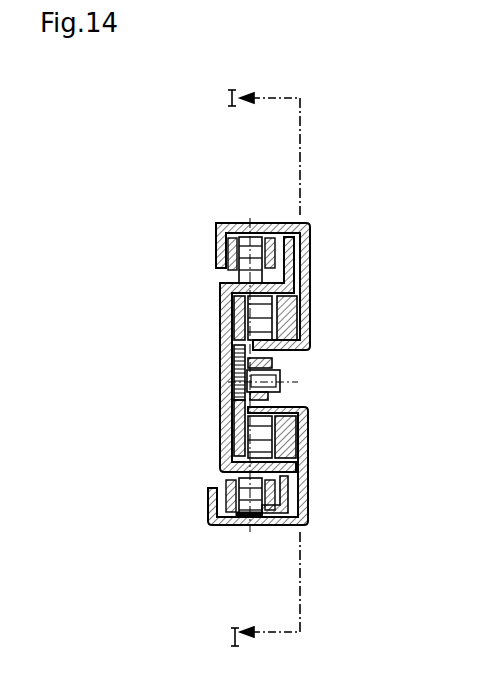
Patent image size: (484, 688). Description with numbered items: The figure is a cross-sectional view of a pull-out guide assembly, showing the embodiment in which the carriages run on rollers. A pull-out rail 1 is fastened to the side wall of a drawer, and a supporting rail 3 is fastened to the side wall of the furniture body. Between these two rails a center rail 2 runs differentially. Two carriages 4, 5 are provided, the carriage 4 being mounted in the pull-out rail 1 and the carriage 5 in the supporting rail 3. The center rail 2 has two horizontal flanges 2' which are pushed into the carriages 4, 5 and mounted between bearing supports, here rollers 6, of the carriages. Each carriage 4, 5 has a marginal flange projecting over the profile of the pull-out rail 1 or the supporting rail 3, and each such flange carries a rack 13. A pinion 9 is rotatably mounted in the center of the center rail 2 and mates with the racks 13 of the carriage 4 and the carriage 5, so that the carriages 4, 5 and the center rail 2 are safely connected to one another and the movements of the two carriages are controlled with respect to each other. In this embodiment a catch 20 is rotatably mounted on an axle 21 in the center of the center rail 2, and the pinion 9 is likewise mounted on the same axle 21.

The pull-out rail 1 is at (309, 283).
The center rail 2 is at (223, 354).
The horizontal flanges 2' is at (257, 383).
The supporting rail 3 is at (301, 475).
The carriage 4 is at (310, 305).
The carriage 5 is at (292, 447).
The rollers 6 is at (244, 526).
The pinion 9 is at (246, 374).
The rack 13 is at (238, 348).
The catch 20 is at (278, 366).
The axle 21 is at (282, 380).